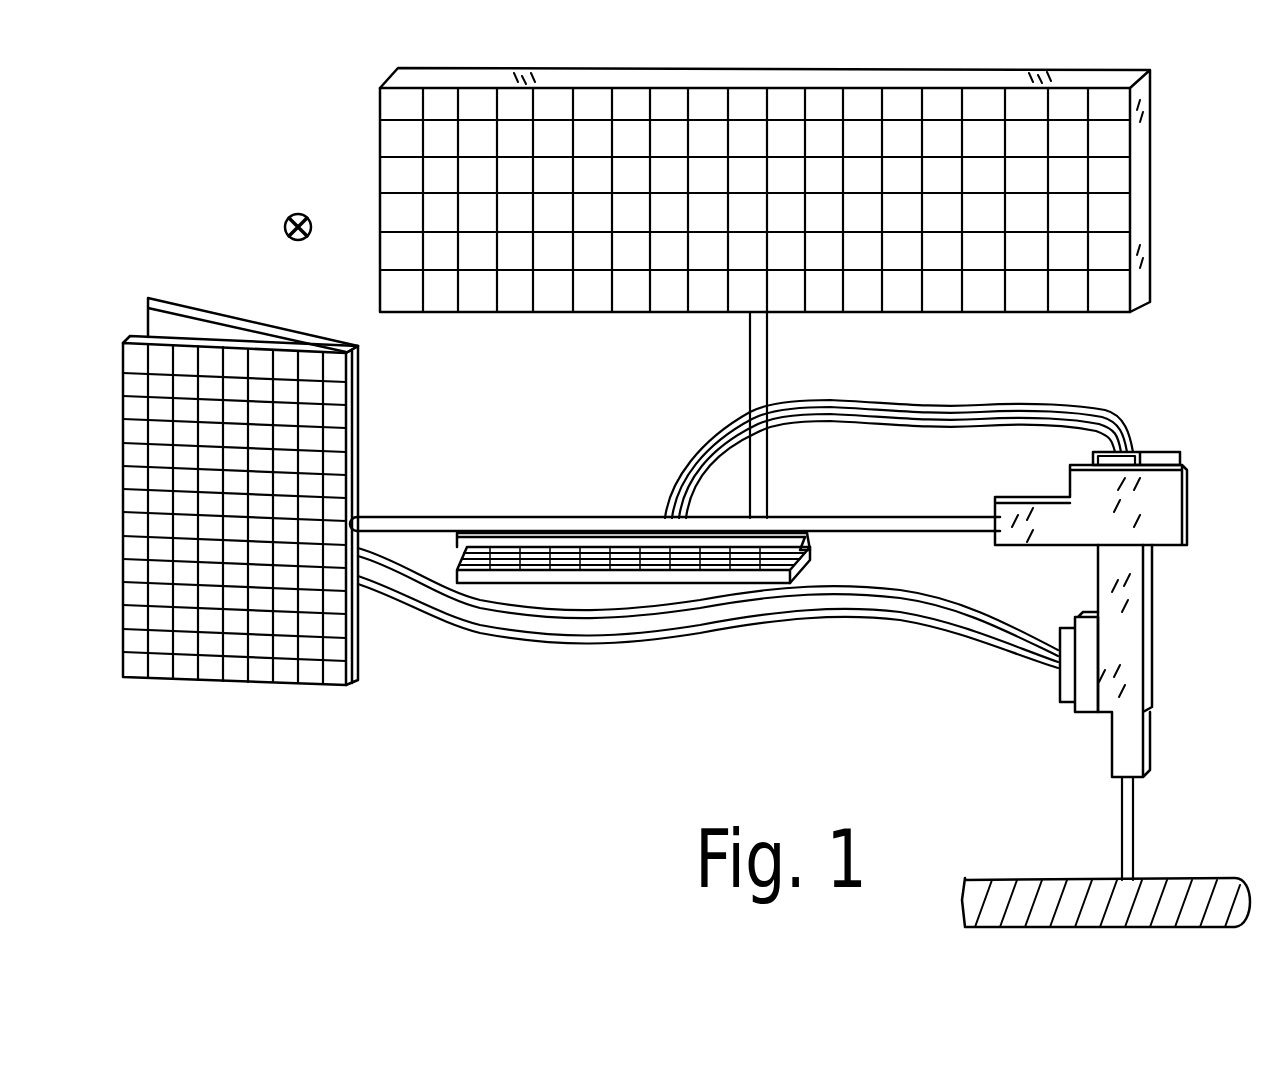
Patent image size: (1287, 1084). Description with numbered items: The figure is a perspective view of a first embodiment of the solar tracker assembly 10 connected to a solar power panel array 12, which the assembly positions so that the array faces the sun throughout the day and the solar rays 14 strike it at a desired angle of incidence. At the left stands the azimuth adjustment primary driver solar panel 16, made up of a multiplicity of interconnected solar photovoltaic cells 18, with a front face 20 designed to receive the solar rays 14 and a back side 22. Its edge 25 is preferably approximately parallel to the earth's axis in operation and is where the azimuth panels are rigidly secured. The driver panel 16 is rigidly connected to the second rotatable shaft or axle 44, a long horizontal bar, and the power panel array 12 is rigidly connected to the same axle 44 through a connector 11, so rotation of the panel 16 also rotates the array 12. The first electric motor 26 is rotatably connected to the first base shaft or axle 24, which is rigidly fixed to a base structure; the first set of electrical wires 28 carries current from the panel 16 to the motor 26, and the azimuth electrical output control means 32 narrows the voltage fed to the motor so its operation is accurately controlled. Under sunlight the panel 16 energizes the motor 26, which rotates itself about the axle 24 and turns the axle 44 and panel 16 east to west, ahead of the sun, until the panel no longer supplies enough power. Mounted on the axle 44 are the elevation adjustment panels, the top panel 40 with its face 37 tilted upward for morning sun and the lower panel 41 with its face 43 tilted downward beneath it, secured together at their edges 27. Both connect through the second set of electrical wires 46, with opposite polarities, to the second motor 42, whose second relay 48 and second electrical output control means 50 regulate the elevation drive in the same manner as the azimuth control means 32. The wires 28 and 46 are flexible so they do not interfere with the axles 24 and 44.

The solar tracker assembly 10 is at (1162, 318).
The connector 11 is at (770, 372).
The solar power panel array 12 is at (1162, 158).
The solar rays 14 is at (283, 228).
The azimuth adjustment primary driver solar panel 16 is at (262, 691).
The solar photovoltaic cells 18 is at (342, 414).
The front side or face 20 is at (320, 483).
The back side 22 is at (253, 325).
The first base shaft or axle 24 is at (1133, 838).
The edge 25 is at (362, 685).
The first electric motor 26 is at (1155, 647).
The edges 27 is at (812, 540).
The first set of electrical wires 28 is at (975, 618).
The azimuth electrical output control means 32 is at (1057, 663).
The front side or face 37 is at (603, 530).
The top elevation adjustment panel 40 is at (447, 551).
The lower elevation adjustment panel 41 is at (814, 573).
The second motor 42 is at (1015, 491).
The front side or face 43 is at (457, 565).
The second rotatable shaft or axle 44 is at (515, 515).
The second set of electrical wires 46 is at (960, 408).
The second relay 48 is at (1160, 457).
The second electrical output control means 50 is at (1100, 456).